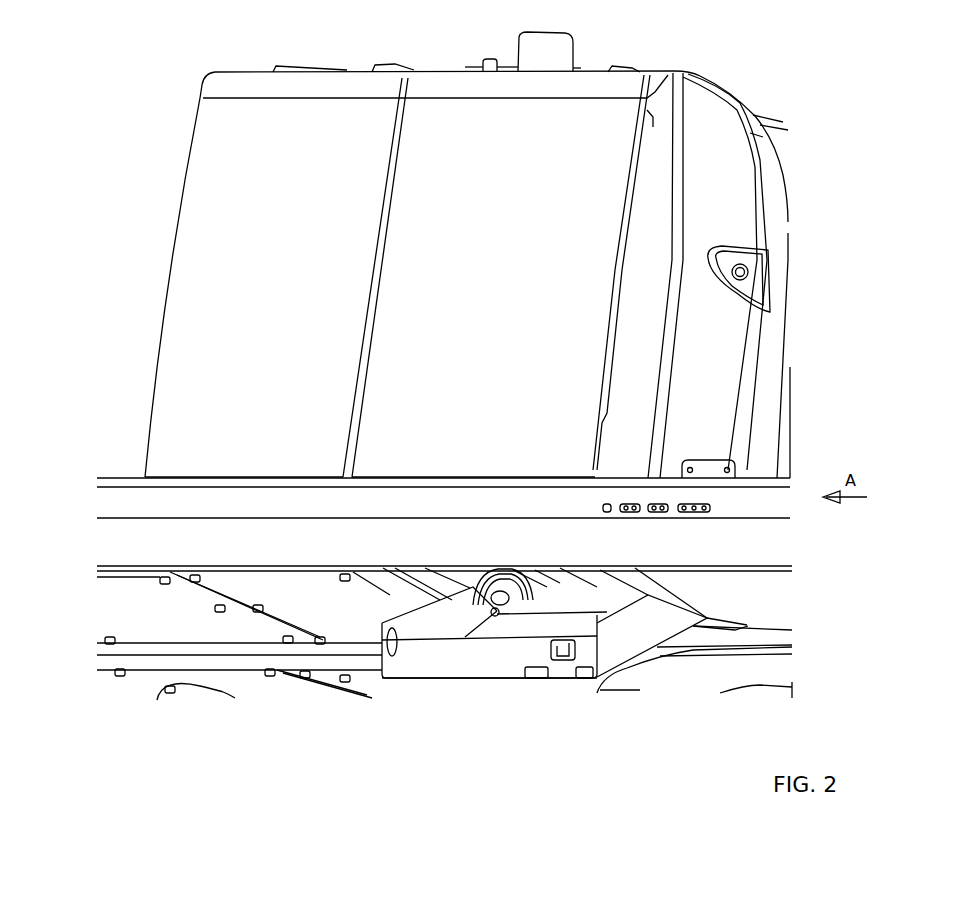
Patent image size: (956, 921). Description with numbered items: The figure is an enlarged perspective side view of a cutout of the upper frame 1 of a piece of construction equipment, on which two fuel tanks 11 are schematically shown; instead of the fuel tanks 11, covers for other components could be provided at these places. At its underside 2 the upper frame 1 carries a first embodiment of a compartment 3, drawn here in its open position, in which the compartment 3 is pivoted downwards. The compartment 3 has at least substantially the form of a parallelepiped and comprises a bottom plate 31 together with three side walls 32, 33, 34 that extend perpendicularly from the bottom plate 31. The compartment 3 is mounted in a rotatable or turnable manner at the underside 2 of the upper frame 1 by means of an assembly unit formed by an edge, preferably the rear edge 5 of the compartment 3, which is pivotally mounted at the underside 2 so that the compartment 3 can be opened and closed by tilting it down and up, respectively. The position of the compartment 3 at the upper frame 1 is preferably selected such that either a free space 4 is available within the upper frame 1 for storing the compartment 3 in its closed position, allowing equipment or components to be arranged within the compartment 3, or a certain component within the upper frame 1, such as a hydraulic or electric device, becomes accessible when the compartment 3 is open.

The upper frame 1 is at (100, 128).
The underside 2 is at (152, 499).
The fuel tank 11 is at (270, 274).
The compartment 3 is at (537, 657).
The bottom plate 31 is at (528, 627).
The side wall 32 is at (448, 671).
The side wall 33 is at (450, 627).
The side wall 34 is at (652, 643).
The free space 4 is at (552, 582).
The rear edge 5 is at (587, 617).